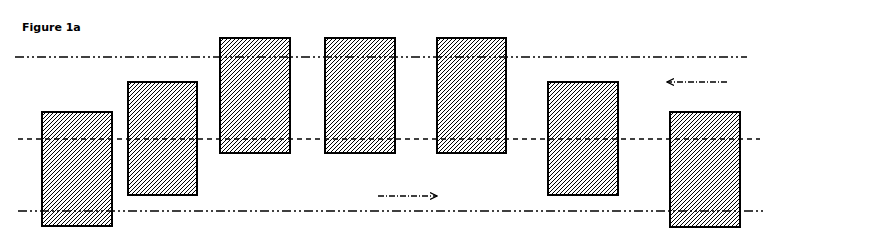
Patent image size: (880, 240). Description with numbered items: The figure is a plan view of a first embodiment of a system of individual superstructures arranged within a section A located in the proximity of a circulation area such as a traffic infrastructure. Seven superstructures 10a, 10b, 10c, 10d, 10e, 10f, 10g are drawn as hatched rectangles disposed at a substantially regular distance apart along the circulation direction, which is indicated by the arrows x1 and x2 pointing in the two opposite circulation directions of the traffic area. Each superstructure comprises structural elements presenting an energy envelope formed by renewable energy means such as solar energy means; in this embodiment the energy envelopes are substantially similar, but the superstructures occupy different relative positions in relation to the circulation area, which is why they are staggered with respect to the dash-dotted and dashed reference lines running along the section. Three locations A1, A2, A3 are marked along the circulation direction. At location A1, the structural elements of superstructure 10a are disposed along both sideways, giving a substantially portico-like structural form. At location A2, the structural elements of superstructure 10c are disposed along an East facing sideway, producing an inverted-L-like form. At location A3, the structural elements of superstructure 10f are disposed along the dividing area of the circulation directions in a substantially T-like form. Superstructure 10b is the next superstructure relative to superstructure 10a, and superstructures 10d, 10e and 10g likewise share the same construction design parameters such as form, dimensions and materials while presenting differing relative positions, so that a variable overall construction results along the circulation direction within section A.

The superstructure 10a is at (77, 161).
The superstructure 10b is at (162, 130).
The superstructure 10c is at (255, 88).
The superstructure 10d is at (360, 88).
The superstructure 10e is at (471, 88).
The superstructure 10f is at (583, 131).
The superstructure 10g is at (705, 161).
The location A1 is at (380, 130).
The location A2 is at (389, 171).
The location A3 is at (390, 200).
The section A is at (759, 196).
The first direction x1 is at (681, 85).
The second direction x2 is at (421, 197).